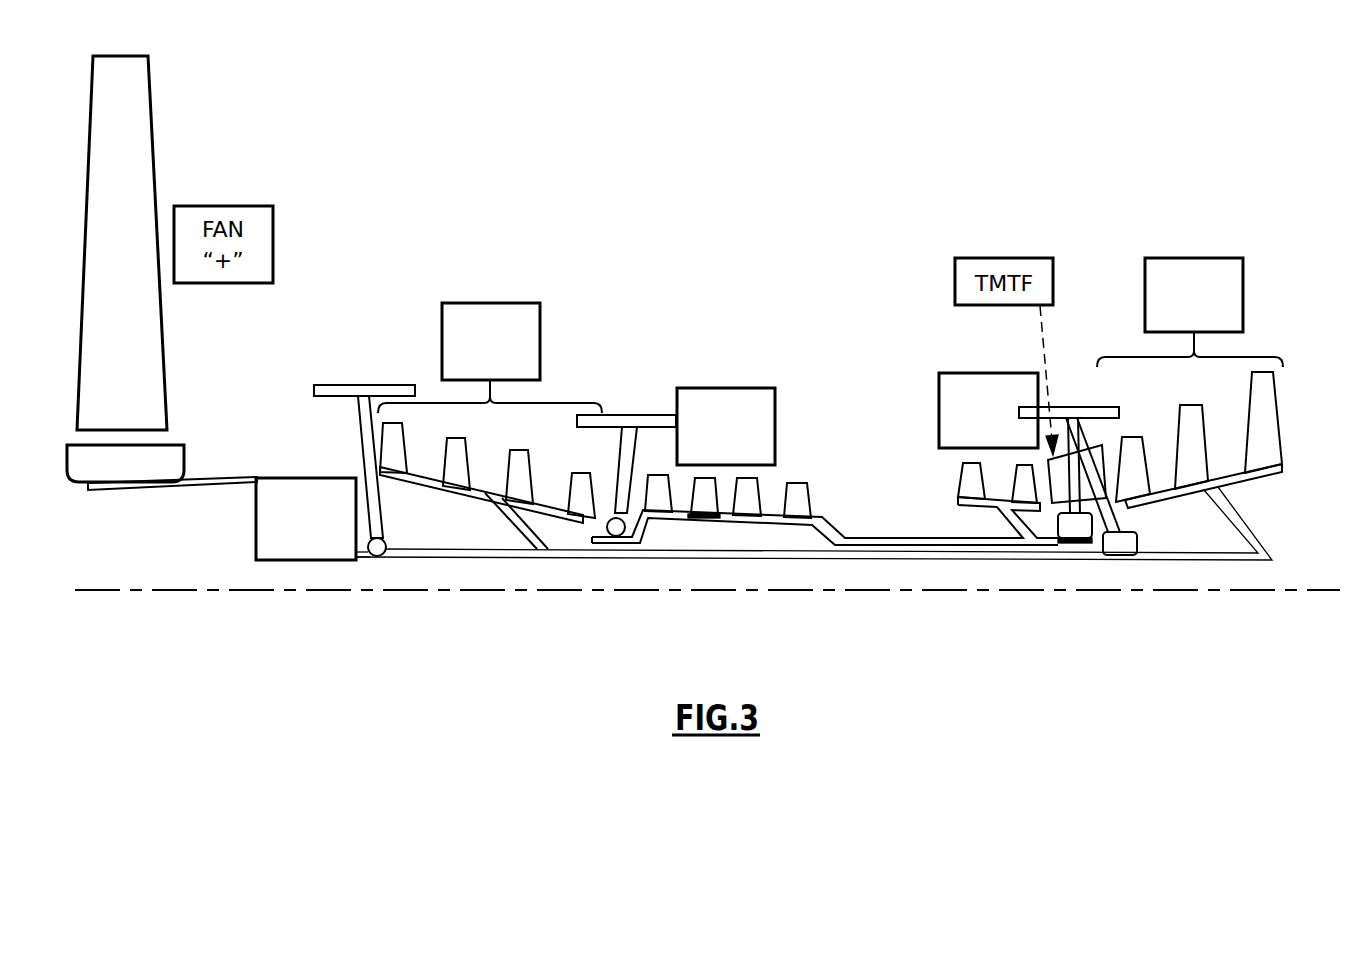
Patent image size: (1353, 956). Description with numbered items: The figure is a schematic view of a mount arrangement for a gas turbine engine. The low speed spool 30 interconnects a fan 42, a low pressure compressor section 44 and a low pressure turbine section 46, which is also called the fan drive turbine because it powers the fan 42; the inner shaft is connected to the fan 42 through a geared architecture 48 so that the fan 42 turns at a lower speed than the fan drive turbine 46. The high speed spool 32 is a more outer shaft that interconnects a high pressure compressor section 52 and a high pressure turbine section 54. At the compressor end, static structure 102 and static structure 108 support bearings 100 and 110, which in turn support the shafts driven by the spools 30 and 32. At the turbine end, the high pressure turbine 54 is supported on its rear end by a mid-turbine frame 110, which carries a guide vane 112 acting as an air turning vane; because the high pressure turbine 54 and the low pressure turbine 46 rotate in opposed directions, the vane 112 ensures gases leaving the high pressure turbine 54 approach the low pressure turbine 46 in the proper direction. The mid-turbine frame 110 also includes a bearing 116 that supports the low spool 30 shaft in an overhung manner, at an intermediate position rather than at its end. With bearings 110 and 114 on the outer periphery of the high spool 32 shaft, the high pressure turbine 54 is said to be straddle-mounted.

The low speed spool 30 is at (800, 558).
The high speed spool 32 is at (892, 538).
The fan 42 is at (140, 150).
The low pressure compressor section 44 is at (525, 310).
The low pressure turbine section 46 is at (1235, 293).
The geared architecture 48 is at (322, 535).
The high pressure compressor section 52 is at (760, 388).
The high pressure turbine section 54 is at (938, 392).
The bearing 100 is at (386, 542).
The static structure 102 is at (378, 385).
The static structure 108 is at (640, 415).
The mid-turbine frame 110 is at (608, 520).
The guide vane 112 is at (1103, 452).
The bearing 114 is at (1075, 540).
The bearing 116 is at (1137, 540).